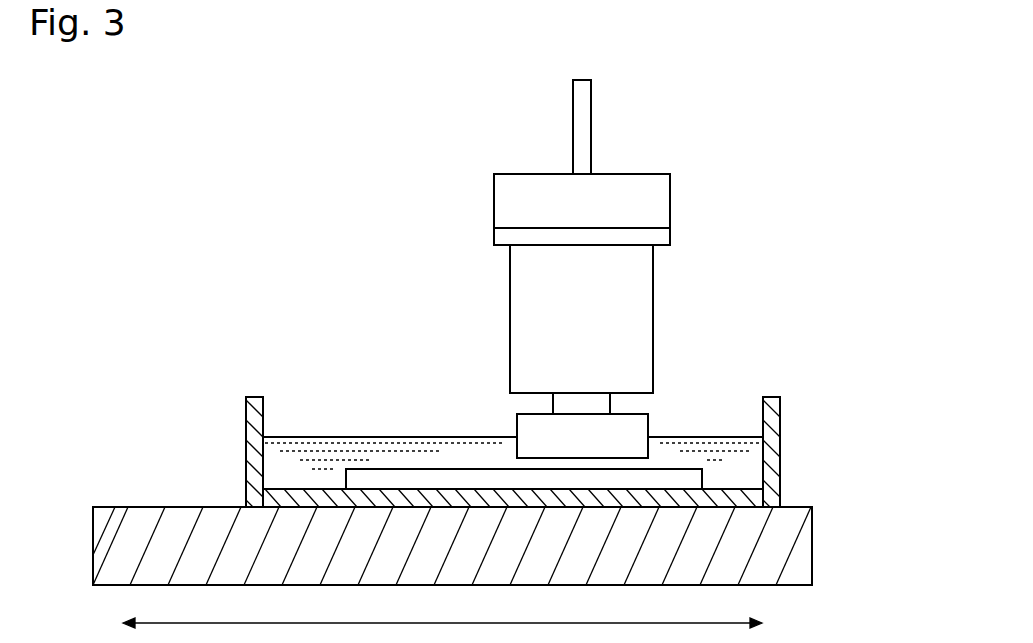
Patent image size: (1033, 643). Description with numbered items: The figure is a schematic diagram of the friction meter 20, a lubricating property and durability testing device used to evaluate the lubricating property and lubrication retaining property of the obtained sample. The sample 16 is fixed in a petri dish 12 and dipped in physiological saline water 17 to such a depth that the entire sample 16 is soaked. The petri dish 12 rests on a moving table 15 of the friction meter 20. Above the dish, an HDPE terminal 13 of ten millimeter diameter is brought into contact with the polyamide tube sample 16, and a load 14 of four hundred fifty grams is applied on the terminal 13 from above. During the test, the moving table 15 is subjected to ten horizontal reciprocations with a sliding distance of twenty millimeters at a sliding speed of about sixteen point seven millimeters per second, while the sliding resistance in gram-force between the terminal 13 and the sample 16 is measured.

The friction meter 20 is at (198, 166).
The moving table 15 is at (140, 507).
The petri dish 12 is at (780, 420).
The physiological saline water 17 is at (472, 452).
The sample 16 is at (380, 477).
The load 14 is at (670, 203).
The HDPE terminal 13 is at (640, 465).